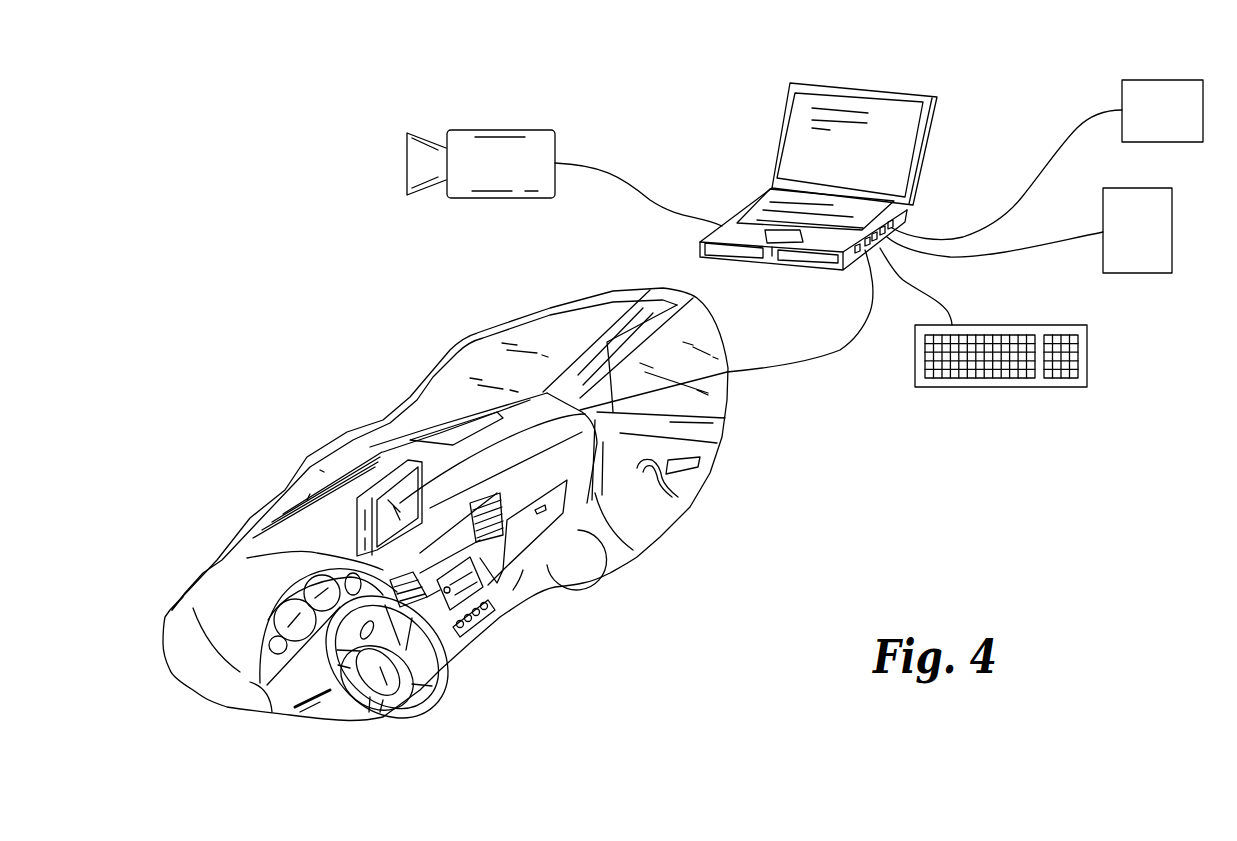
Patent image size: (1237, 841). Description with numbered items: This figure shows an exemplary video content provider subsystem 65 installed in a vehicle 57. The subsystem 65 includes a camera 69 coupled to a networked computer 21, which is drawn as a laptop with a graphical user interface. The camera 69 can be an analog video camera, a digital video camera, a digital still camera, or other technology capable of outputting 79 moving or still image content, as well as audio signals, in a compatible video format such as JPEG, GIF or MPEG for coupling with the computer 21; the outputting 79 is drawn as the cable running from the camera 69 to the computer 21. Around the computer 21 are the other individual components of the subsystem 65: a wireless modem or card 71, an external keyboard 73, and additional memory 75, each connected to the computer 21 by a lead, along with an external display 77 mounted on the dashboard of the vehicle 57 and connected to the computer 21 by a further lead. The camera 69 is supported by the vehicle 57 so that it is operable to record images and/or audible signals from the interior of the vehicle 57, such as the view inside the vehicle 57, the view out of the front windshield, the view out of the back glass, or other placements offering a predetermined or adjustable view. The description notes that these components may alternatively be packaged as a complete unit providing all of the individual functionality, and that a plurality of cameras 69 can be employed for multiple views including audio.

The computer 21 is at (887, 88).
The vehicle 57 is at (580, 586).
The subsystem 65 is at (300, 280).
The camera 69 is at (517, 130).
The wireless modem or card 71 is at (1148, 80).
The external keyboard 73 is at (995, 325).
The additional memory 75 is at (1130, 188).
The external display 77 is at (357, 535).
The outputting 79 is at (660, 192).